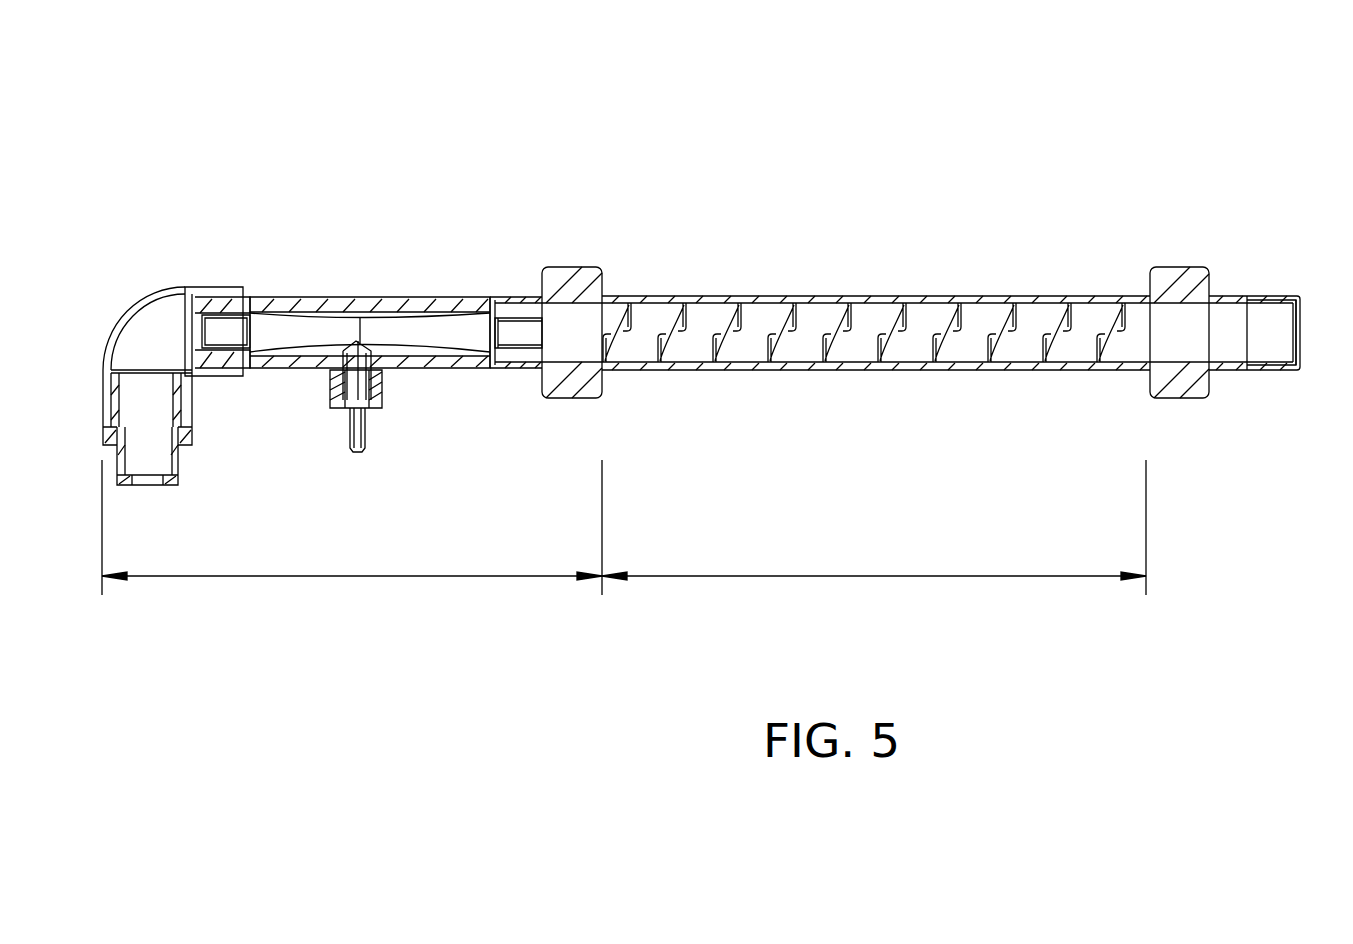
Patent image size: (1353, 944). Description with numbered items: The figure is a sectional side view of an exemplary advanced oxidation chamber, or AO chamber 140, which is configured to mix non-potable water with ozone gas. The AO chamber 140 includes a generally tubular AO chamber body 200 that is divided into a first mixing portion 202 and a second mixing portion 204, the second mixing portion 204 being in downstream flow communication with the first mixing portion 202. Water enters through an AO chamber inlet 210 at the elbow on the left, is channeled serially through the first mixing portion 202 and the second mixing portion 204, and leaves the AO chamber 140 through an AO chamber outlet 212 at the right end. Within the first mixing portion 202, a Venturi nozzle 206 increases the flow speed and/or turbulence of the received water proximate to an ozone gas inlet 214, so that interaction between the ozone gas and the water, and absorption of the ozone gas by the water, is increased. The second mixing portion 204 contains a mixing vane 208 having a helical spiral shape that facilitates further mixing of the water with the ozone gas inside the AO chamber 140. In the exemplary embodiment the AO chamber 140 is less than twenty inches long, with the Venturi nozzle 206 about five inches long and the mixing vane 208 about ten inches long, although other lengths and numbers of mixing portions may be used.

The AO chamber 140 is at (823, 126).
The AO chamber body 200 is at (708, 295).
The first mixing portion 202 is at (337, 577).
The second mixing portion 204 is at (888, 577).
The Venturi nozzle 206 is at (392, 295).
The mixing vane 208 is at (922, 317).
The AO chamber inlet 210 is at (178, 460).
The AO chamber outlet 212 is at (1262, 297).
The ozone gas inlet 214 is at (365, 410).